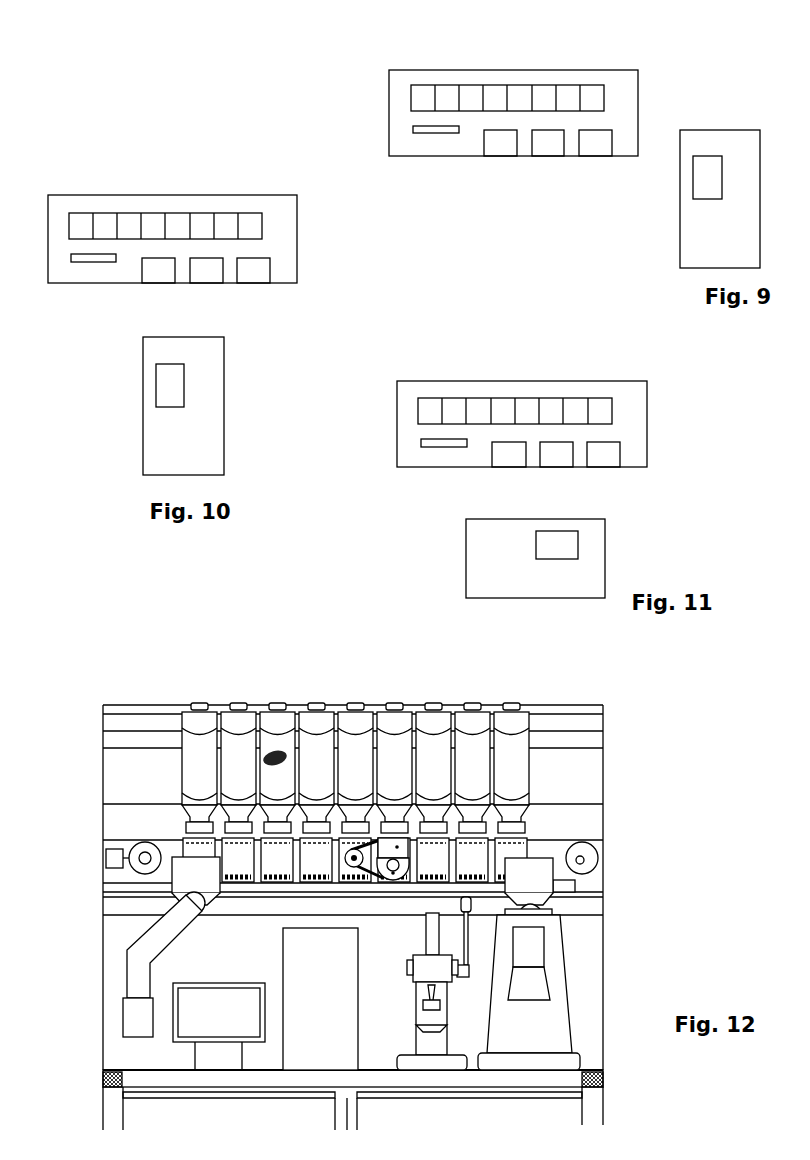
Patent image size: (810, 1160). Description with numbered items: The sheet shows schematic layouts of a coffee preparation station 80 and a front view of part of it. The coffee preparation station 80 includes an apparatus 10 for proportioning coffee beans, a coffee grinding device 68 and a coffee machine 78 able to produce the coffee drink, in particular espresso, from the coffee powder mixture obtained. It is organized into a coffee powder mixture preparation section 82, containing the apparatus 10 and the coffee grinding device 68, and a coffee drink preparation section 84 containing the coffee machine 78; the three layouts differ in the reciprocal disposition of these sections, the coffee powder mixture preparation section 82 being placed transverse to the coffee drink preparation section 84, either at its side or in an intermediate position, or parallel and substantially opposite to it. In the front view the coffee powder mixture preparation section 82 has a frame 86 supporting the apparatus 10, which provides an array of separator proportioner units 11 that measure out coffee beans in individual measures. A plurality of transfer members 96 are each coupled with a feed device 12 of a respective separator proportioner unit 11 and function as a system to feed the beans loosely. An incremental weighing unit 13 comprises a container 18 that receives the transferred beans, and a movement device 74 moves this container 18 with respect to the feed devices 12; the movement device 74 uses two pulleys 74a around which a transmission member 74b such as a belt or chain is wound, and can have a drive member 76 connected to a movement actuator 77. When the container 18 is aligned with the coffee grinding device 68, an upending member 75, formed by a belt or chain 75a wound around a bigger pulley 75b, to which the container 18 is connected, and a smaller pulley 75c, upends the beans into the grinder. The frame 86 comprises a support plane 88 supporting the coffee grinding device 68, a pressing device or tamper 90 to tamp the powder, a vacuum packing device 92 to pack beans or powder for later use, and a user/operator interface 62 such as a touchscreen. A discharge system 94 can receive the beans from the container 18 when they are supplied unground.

In FIG. 9, the apparatus 10 is at (577, 73).
In FIG. 10, the apparatus 10 is at (238, 205).
In FIG. 11, the apparatus 10 is at (585, 388).
In FIG. 12, the apparatus 10 is at (541, 757).
In FIG. 12, the separator proportioner unit 11 is at (393, 820).
In FIG. 12, the feed device 12 is at (318, 810).
In FIG. 12, the incremental weighing unit 13 is at (414, 849).
In FIG. 12, the container 18 is at (397, 847).
In FIG. 9, the user/operator interface 62 is at (435, 130).
In FIG. 10, the user/operator interface 62 is at (93, 258).
In FIG. 11, the user/operator interface 62 is at (443, 443).
In FIG. 12, the user/operator interface 62 is at (220, 980).
In FIG. 9, the coffee grinding device 68 is at (602, 147).
In FIG. 10, the coffee grinding device 68 is at (260, 275).
In FIG. 11, the coffee grinding device 68 is at (610, 459).
In FIG. 12, the coffee grinding device 68 is at (576, 1002).
In FIG. 12, the movement device 74 is at (350, 822).
In FIG. 12, the pulleys 74a is at (138, 849).
In FIG. 12, the transmission member 74b is at (550, 846).
In FIG. 12, the upending member 75 is at (396, 815).
In FIG. 12, the belt or chain 75a is at (365, 874).
In FIG. 12, the bigger pulley 75b is at (394, 875).
In FIG. 12, the smaller pulley 75c is at (352, 859).
In FIG. 12, the drive member 76 is at (113, 859).
In FIG. 12, the movement actuator 77 is at (122, 873).
In FIG. 9, the coffee machine 78 is at (707, 168).
In FIG. 10, the coffee machine 78 is at (164, 384).
In FIG. 11, the coffee machine 78 is at (562, 544).
In FIG. 9, the coffee preparation station 80 is at (583, 225).
In FIG. 10, the coffee preparation station 80 is at (58, 398).
In FIG. 11, the coffee preparation station 80 is at (403, 520).
In FIG. 9, the coffee powder mixture preparation section 82 is at (626, 90).
In FIG. 10, the coffee powder mixture preparation section 82 is at (285, 218).
In FIG. 11, the coffee powder mixture preparation section 82 is at (635, 402).
In FIG. 12, the coffee powder mixture preparation section 82 is at (77, 678).
In FIG. 9, the coffee drink preparation section 84 is at (695, 232).
In FIG. 10, the coffee drink preparation section 84 is at (158, 440).
In FIG. 11, the coffee drink preparation section 84 is at (485, 563).
In FIG. 12, the frame 86 is at (93, 1010).
In FIG. 12, the support plane 88 is at (595, 1069).
In FIG. 9, the pressing device or tamper 90 is at (552, 147).
In FIG. 10, the pressing device or tamper 90 is at (210, 275).
In FIG. 11, the pressing device or tamper 90 is at (561, 459).
In FIG. 12, the pressing device or tamper 90 is at (410, 1005).
In FIG. 9, the vacuum packing device 92 is at (501, 147).
In FIG. 10, the vacuum packing device 92 is at (159, 275).
In FIG. 11, the vacuum packing device 92 is at (509, 459).
In FIG. 12, the vacuum packing device 92 is at (314, 1052).
In FIG. 12, the discharge system 94 is at (138, 966).
In FIG. 12, the transfer members 96 is at (233, 750).